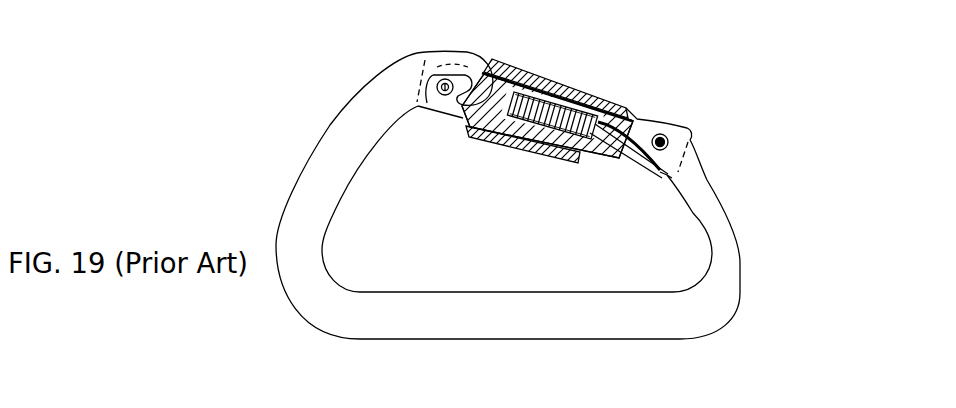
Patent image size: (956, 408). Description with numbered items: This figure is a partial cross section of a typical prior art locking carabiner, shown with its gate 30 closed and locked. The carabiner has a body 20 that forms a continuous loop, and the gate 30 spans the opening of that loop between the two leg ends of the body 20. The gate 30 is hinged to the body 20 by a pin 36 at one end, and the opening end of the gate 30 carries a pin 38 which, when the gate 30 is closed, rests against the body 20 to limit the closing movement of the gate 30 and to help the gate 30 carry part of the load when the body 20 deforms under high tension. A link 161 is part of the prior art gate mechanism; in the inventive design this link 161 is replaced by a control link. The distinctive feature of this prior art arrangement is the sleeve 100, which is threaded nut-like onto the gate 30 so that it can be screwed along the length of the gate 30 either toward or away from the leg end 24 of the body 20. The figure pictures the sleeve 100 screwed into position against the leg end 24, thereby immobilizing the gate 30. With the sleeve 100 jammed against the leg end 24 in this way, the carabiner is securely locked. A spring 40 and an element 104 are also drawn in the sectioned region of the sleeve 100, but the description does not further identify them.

The body 20 is at (707, 180).
The leg end 24 is at (478, 68).
The gate 30 is at (618, 102).
The pin 36 is at (663, 138).
The pin 38 is at (443, 80).
The spring 40 is at (517, 118).
The sleeve 100 is at (534, 74).
The housing wall 104 is at (484, 70).
The link 161 is at (640, 150).